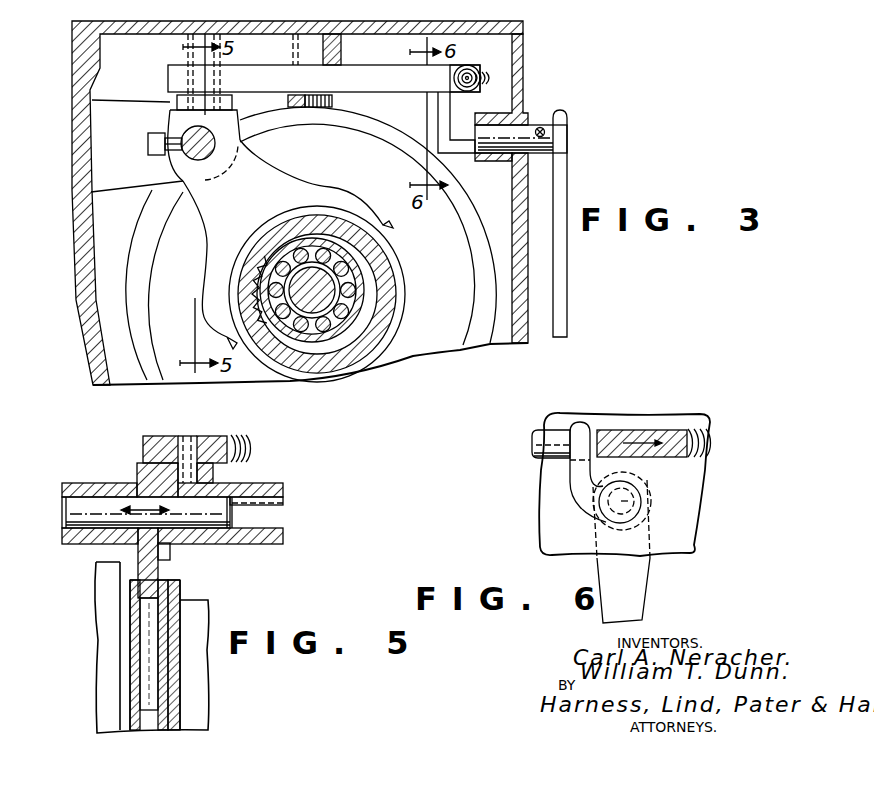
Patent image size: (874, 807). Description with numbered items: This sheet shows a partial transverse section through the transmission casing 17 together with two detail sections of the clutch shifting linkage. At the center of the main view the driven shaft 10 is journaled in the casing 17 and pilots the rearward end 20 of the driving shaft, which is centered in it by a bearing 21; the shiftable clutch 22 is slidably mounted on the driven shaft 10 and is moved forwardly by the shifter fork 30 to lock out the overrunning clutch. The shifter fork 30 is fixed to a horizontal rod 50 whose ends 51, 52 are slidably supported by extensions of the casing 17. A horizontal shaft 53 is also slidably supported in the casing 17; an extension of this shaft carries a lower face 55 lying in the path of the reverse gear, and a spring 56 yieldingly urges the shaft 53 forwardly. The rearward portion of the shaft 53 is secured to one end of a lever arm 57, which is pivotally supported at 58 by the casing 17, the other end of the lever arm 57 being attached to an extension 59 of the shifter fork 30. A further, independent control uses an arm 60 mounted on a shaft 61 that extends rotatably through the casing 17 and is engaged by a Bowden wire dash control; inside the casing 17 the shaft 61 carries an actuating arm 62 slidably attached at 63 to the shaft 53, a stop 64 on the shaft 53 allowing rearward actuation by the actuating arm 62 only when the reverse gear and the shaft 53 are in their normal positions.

In FIG. 3, the driven shaft 10 is at (355, 288).
In FIG. 3, the casing 17 is at (73, 126).
In FIG. 5, the casing 17 is at (90, 540).
In FIG. 3, the rearward end of the driving shaft 20 is at (312, 290).
In FIG. 3, the bearing 21 is at (362, 270).
In FIG. 3, the shiftable clutch 22 is at (380, 312).
In FIG. 5, the shiftable clutch 22 is at (175, 596).
In FIG. 3, the shifter fork 30 is at (232, 183).
In FIG. 5, the shifter fork 30 is at (160, 566).
In FIG. 3, the horizontal rod 50 is at (168, 133).
In FIG. 5, the horizontal rod 50 is at (115, 505).
In FIG. 5, the end of the horizontal rod 51 is at (63, 498).
In FIG. 3, the end of the horizontal rod 52 is at (252, 18).
In FIG. 5, the end of the horizontal rod 52 is at (240, 500).
In FIG. 6, the horizontal shaft 53 is at (546, 430).
In FIG. 3, the lower face 55 is at (470, 65).
In FIG. 3, the spring 56 is at (481, 79).
In FIG. 5, the spring 56 is at (251, 450).
In FIG. 6, the spring 56 is at (712, 424).
In FIG. 3, the lever arm 57 is at (358, 85).
In FIG. 5, the lever arm 57 is at (207, 437).
In FIG. 3, the pivot 58 is at (297, 108).
In FIG. 3, the extension of the shifter fork 59 is at (230, 98).
In FIG. 5, the extension of the shifter fork 59 is at (213, 476).
In FIG. 3, the arm 60 is at (567, 178).
In FIG. 6, the arm 60 is at (636, 578).
In FIG. 3, the shaft 61 is at (490, 143).
In FIG. 6, the shaft 61 is at (650, 487).
In FIG. 3, the actuating arm 62 is at (446, 108).
In FIG. 6, the actuating arm 62 is at (575, 483).
In FIG. 6, the slidable attachment 63 is at (573, 428).
In FIG. 6, the stop 64 is at (600, 432).